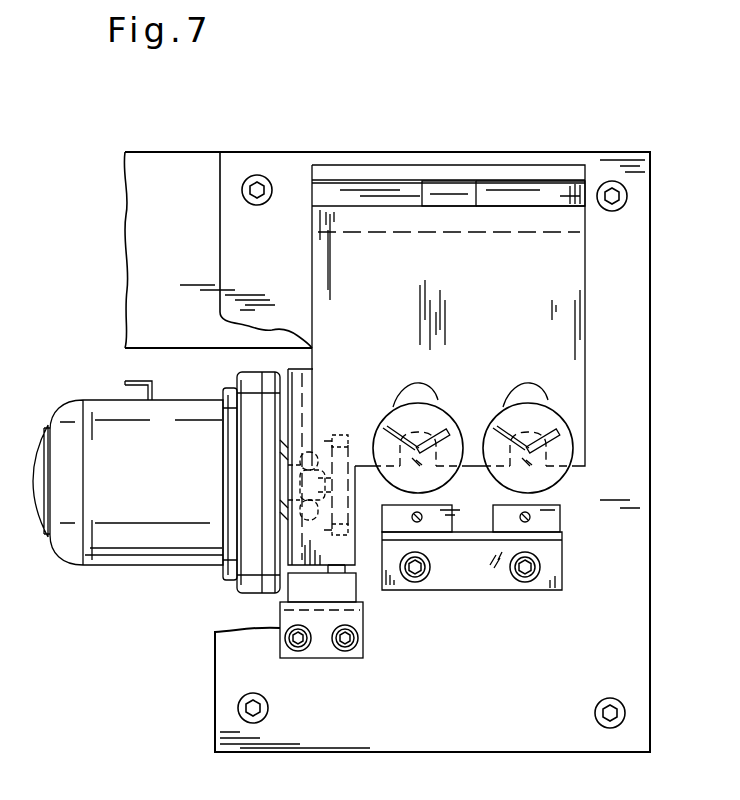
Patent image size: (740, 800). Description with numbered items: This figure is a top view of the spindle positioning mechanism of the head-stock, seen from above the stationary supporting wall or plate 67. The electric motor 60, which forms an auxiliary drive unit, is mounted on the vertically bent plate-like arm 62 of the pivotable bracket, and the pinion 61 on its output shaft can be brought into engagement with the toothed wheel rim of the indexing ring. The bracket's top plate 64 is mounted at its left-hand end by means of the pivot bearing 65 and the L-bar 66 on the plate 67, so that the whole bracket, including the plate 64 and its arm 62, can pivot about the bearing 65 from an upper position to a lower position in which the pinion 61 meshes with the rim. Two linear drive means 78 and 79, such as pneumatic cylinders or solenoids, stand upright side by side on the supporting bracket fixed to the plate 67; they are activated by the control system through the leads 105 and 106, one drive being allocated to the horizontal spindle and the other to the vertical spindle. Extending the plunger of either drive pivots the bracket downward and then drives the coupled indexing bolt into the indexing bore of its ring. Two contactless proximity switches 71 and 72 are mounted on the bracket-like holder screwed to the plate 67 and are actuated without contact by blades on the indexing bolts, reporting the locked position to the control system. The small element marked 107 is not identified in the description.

The electric motor 60 is at (146, 484).
The pinion 61 is at (337, 440).
The vertically bent plate-like arm 62 is at (300, 400).
The top plate 64 is at (465, 290).
The pivot bearing 65 is at (447, 192).
The L-bar 66 is at (527, 172).
The supporting wall or plate 67 is at (606, 305).
The contactless proximity switch 71 is at (437, 523).
The contactless proximity switch 72 is at (557, 520).
The linear drive means 78 is at (430, 430).
The linear drive means 79 is at (556, 430).
The lead 105 is at (450, 440).
The lead 106 is at (550, 430).
The connector bracket 107 is at (154, 382).